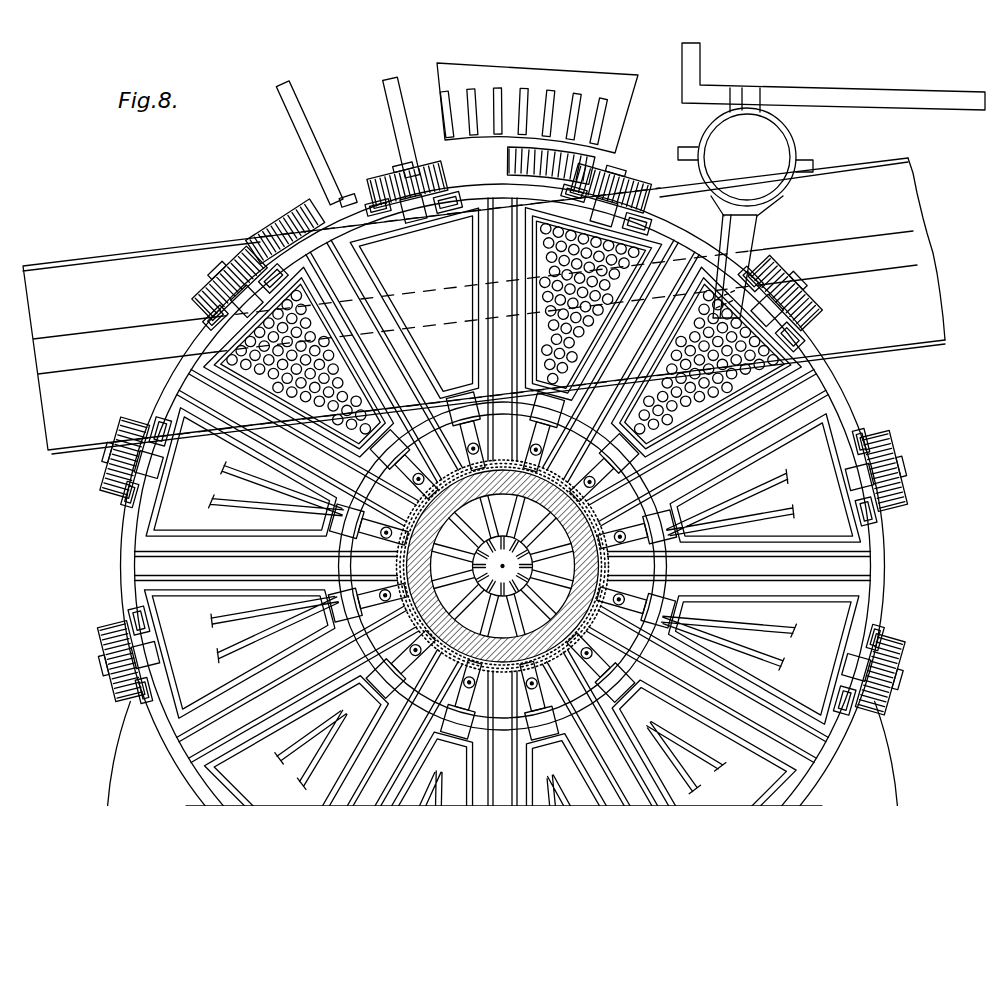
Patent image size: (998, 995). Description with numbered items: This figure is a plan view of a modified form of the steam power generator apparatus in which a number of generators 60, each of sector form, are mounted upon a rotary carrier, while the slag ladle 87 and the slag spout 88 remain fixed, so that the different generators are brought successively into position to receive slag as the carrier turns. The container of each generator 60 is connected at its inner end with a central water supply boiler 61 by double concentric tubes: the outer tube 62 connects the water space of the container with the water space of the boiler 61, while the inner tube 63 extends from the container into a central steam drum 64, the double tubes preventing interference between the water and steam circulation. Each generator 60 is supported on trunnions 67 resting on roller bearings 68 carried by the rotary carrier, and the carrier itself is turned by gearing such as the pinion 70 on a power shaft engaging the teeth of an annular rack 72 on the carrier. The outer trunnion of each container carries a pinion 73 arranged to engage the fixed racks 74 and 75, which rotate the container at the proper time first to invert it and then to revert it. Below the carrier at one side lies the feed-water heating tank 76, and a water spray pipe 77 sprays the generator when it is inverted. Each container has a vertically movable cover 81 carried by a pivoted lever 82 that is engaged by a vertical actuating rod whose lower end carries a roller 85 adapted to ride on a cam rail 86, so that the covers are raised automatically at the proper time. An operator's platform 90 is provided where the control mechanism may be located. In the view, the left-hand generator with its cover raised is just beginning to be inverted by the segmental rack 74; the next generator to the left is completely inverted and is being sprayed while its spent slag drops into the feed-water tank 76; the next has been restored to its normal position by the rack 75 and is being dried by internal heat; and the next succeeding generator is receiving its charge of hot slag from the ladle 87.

The generators 60 is at (140, 388).
The central water supply boiler 61 is at (632, 593).
The outer tube 62 is at (390, 595).
The inner tube 63 is at (400, 560).
The central steam drum 64 is at (535, 566).
The trunnions 67 is at (432, 190).
The roller bearings 68 is at (660, 212).
The pinion 70 is at (352, 222).
The annular rack 72 is at (478, 192).
The pinion 73 is at (390, 182).
The segmental rack 74 is at (278, 232).
The fixed rack 75 is at (535, 160).
The feed-water heating tank 76 is at (484, 306).
The water spray pipe 77 is at (316, 113).
The cover 81 is at (503, 666).
The lever 82 is at (718, 506).
The roller 85 is at (548, 502).
The cam rail 86 is at (510, 478).
The slag ladle 87 is at (796, 150).
The slag spout 88 is at (752, 242).
The operator's platform 90 is at (527, 82).